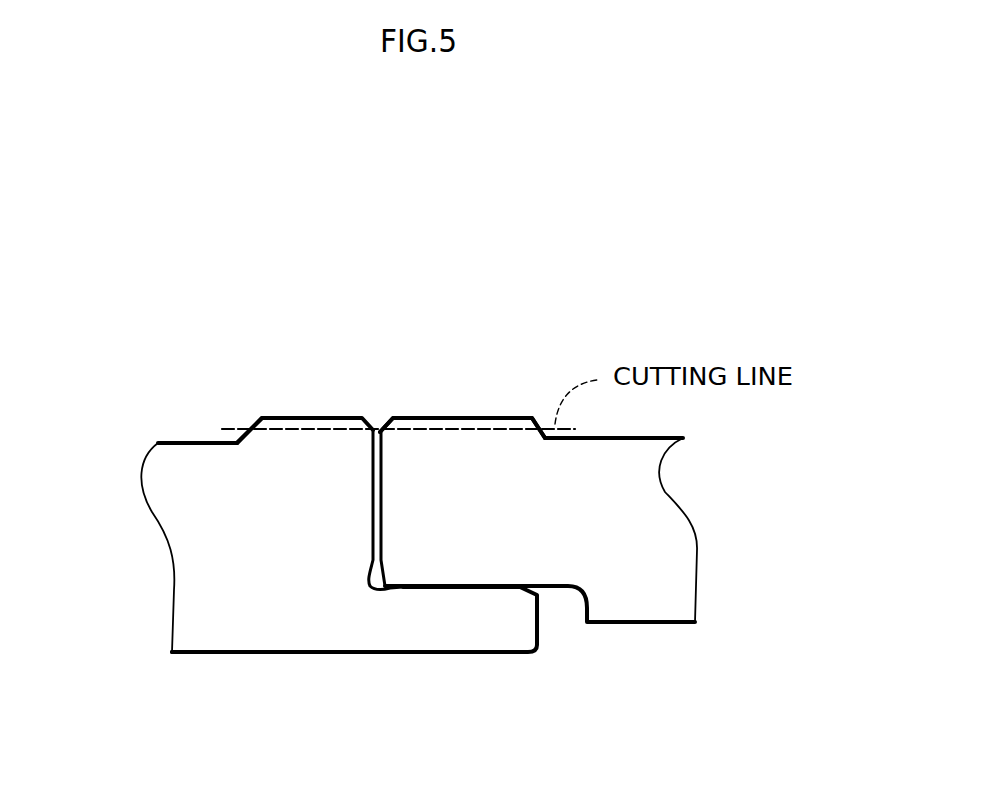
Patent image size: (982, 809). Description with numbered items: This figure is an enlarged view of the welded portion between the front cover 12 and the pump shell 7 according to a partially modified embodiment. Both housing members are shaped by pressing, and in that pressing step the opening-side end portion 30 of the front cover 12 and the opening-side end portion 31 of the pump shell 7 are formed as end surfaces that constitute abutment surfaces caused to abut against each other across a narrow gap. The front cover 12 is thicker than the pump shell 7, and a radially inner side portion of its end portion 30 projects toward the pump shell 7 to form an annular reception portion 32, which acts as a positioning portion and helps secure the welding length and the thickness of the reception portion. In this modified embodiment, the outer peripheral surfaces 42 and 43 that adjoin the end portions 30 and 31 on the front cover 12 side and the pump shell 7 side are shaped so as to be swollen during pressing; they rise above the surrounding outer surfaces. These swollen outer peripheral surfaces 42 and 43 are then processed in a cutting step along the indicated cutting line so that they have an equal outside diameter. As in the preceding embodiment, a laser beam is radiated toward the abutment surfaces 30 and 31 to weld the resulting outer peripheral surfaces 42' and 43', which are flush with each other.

The pump shell 7 is at (672, 540).
The front cover 12 is at (190, 548).
The opening-side end portion of the front cover 30 is at (380, 493).
The opening-side end portion of the pump shell 31 is at (373, 472).
The annular reception portion 32 is at (493, 640).
The outer peripheral surface of the front cover 42 is at (305, 369).
The outer peripheral surface of the front cover after cutting 42' is at (267, 382).
The outer peripheral surface of the pump shell 43 is at (462, 367).
The outer peripheral surface of the pump shell after cutting 43' is at (514, 379).